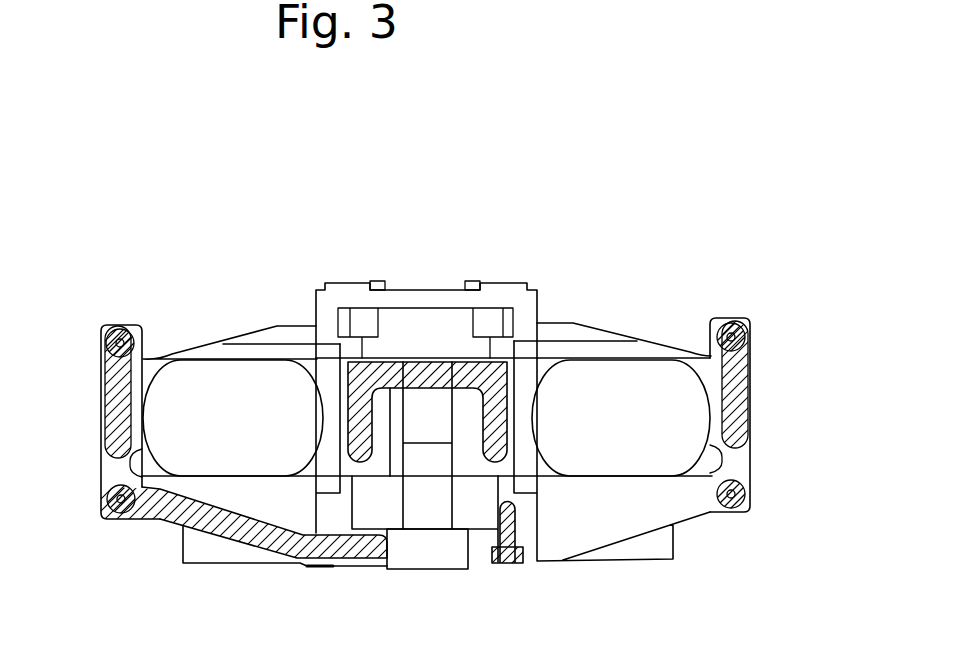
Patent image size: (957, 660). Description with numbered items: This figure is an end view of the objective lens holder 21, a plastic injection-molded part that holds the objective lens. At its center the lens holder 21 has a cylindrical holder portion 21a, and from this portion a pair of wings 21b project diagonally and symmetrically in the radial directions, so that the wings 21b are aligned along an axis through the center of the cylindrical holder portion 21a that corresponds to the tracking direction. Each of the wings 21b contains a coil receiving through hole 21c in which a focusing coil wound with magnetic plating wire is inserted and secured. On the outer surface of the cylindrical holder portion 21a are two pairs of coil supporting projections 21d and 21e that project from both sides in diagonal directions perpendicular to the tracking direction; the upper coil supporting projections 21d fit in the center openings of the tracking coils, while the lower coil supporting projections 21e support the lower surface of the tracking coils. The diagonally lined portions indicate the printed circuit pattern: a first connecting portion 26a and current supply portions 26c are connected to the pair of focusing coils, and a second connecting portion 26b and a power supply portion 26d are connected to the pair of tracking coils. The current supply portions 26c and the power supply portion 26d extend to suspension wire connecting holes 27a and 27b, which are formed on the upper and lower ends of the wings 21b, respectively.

The objective lens holder 21 is at (628, 245).
The cylindrical holder portion 21a is at (505, 289).
The wings 21b is at (195, 352).
The coil receiving through holes 21c is at (140, 448).
The upper coil supporting projections 21d is at (428, 428).
The lower coil supporting projections 21e is at (445, 557).
The first connecting portion 26a is at (440, 362).
The second connecting portion 26b is at (514, 536).
The current supply portions 26c is at (113, 385).
The power supply portion 26d is at (227, 533).
The suspension wire connecting holes 27a is at (104, 326).
The suspension wire connecting holes 27b is at (107, 513).